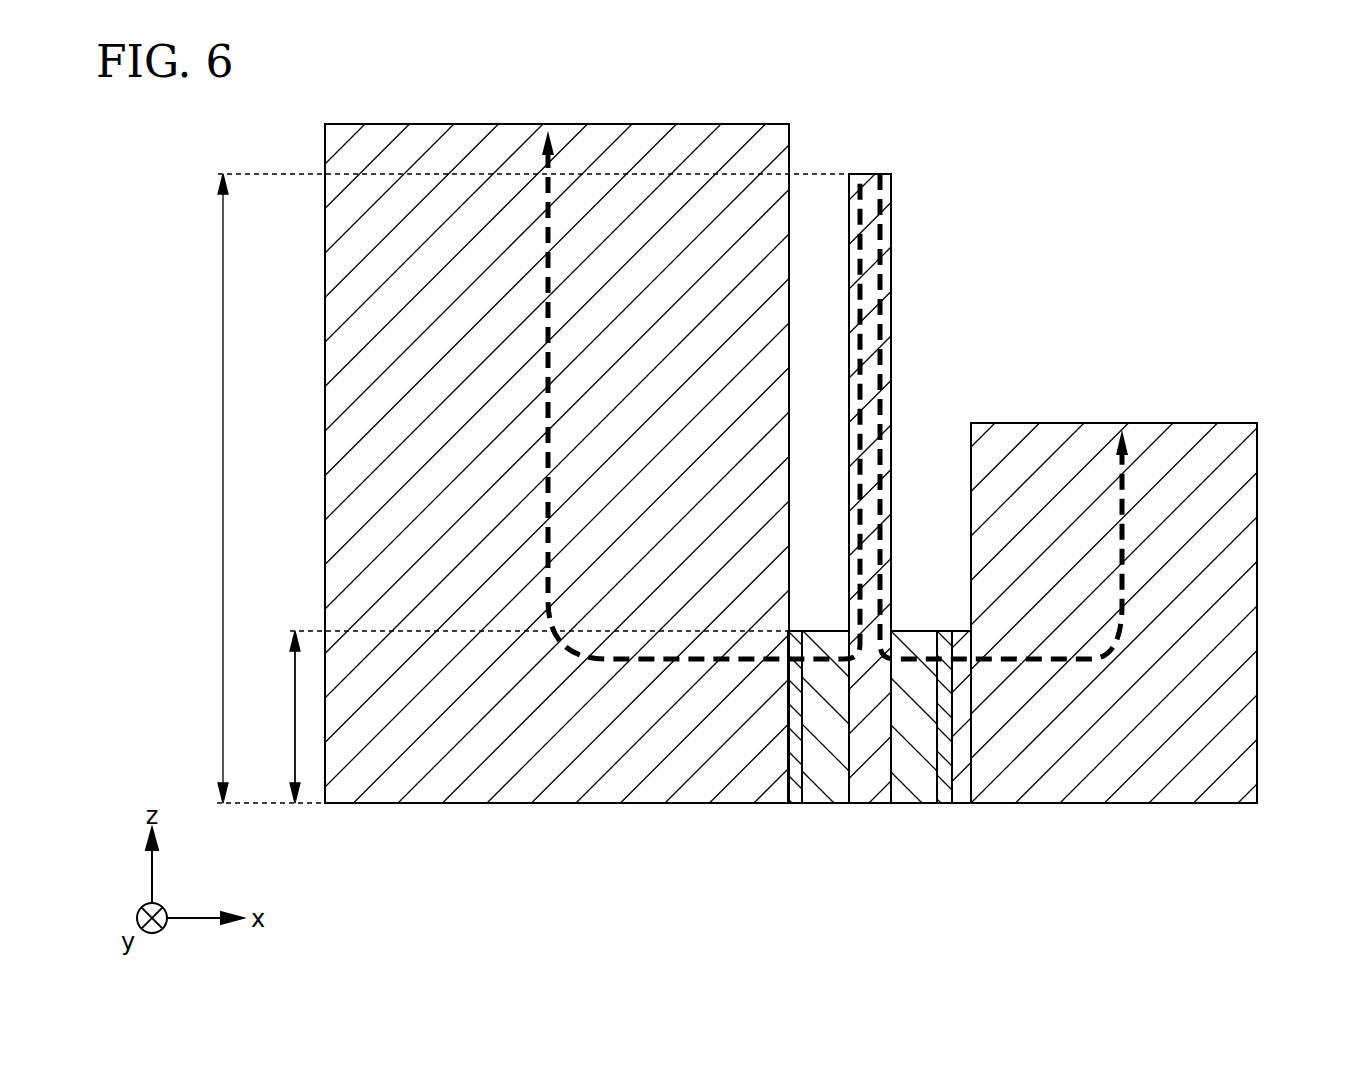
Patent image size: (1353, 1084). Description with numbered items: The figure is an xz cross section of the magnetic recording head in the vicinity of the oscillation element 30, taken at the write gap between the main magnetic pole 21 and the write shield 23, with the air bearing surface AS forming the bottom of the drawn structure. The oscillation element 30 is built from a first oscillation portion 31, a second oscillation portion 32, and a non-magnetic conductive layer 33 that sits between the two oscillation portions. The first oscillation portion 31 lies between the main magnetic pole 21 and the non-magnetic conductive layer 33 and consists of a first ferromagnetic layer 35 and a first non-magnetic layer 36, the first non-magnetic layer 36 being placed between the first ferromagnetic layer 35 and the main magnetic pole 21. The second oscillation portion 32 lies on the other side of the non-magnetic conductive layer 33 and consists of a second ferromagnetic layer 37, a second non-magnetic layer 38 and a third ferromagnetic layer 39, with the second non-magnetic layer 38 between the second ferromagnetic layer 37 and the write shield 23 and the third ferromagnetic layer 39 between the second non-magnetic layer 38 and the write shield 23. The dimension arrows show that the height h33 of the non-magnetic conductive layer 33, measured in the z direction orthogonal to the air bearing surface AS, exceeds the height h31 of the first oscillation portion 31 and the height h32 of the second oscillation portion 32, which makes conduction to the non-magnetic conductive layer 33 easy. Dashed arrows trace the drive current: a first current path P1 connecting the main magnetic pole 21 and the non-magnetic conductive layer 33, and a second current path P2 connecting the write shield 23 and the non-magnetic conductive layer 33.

The main magnetic pole 21 is at (555, 803).
The write shield 23 is at (1082, 803).
The oscillation element 30 is at (878, 569).
The first oscillation portion 31 is at (802, 772).
The second oscillation portion 32 is at (943, 772).
The non-magnetic conductive layer 33 is at (867, 803).
The first ferromagnetic layer 35 is at (822, 748).
The first non-magnetic layer 36 is at (793, 803).
The second ferromagnetic layer 37 is at (915, 803).
The second non-magnetic layer 38 is at (942, 803).
The third ferromagnetic layer 39 is at (977, 748).
The air bearing surface AS is at (1172, 803).
The first current path P1 is at (548, 218).
The second current path P2 is at (1122, 483).
The height of the first oscillation portion h31 is at (273, 717).
The height of the second oscillation portion h32 is at (270, 717).
The height of the non-magnetic conductive layer h33 is at (201, 488).